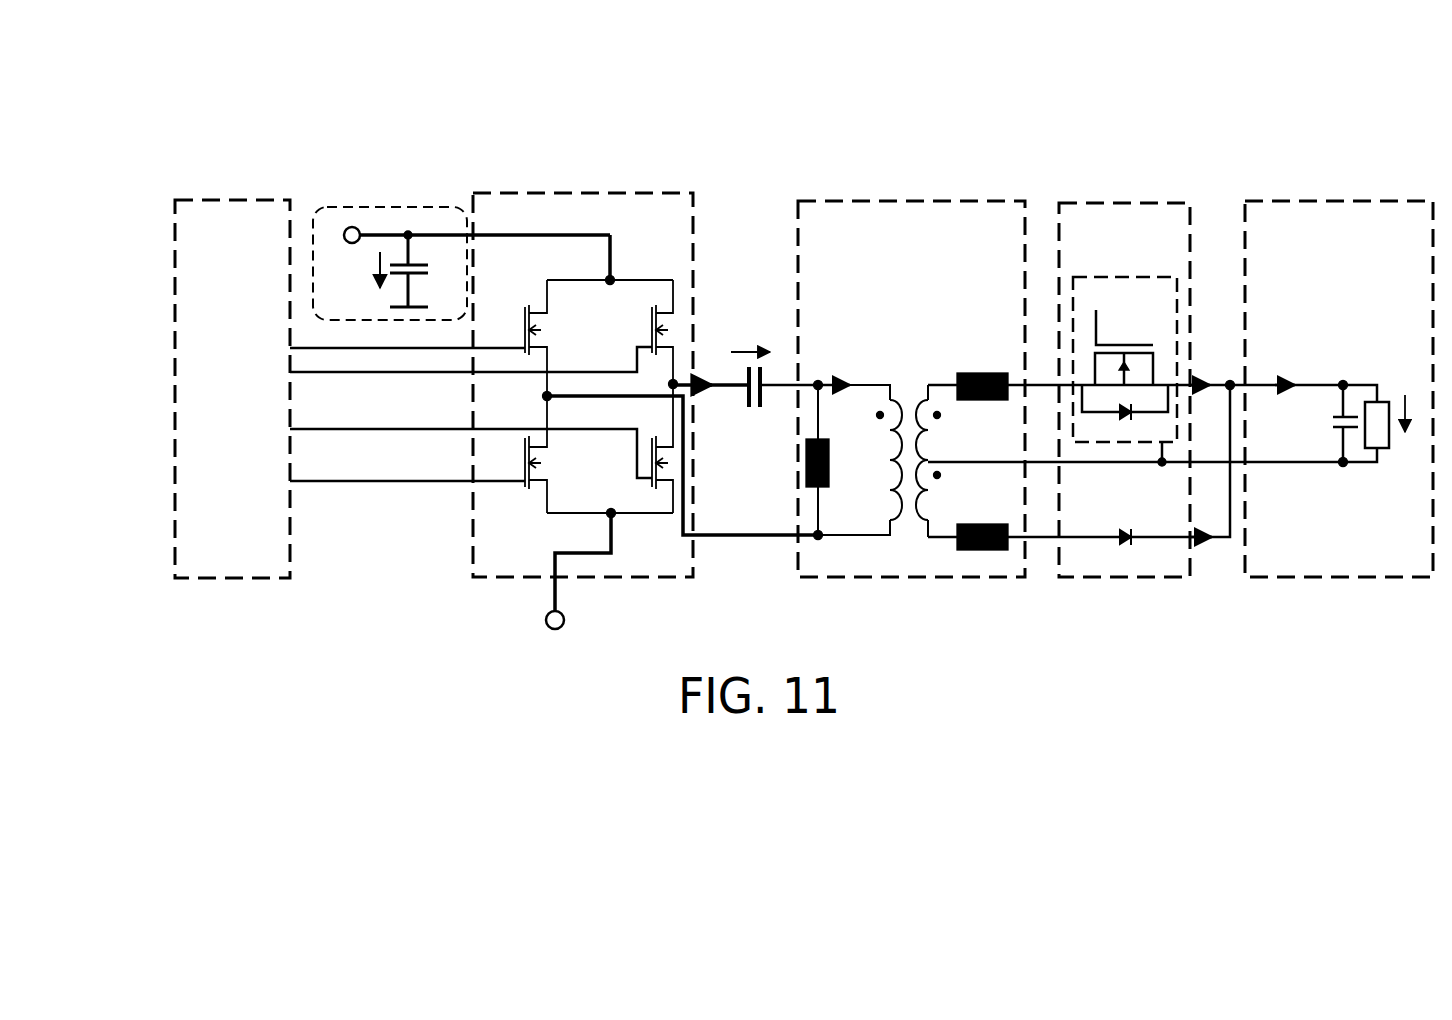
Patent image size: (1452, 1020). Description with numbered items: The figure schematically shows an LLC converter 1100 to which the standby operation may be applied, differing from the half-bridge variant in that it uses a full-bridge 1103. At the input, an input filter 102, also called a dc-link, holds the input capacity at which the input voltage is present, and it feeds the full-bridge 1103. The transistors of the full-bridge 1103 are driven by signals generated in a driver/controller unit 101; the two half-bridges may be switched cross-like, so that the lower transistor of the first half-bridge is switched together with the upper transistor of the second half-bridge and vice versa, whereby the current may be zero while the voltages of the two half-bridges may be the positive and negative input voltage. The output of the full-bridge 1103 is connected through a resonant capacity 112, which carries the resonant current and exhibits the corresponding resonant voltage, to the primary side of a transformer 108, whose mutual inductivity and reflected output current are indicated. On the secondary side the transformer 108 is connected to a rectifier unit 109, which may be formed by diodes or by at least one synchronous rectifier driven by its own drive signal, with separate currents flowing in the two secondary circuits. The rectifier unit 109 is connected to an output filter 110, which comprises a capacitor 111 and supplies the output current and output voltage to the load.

The converter 1100 is at (1027, 88).
The driver/controller unit 101 is at (236, 198).
The input filter 102 is at (400, 192).
The full-bridge 1103 is at (596, 192).
The resonant capacity 112 is at (747, 408).
The transformer 108 is at (917, 200).
The rectifier unit 109 is at (1119, 202).
The output filter 110 is at (1341, 200).
The capacitor 111 is at (1353, 428).